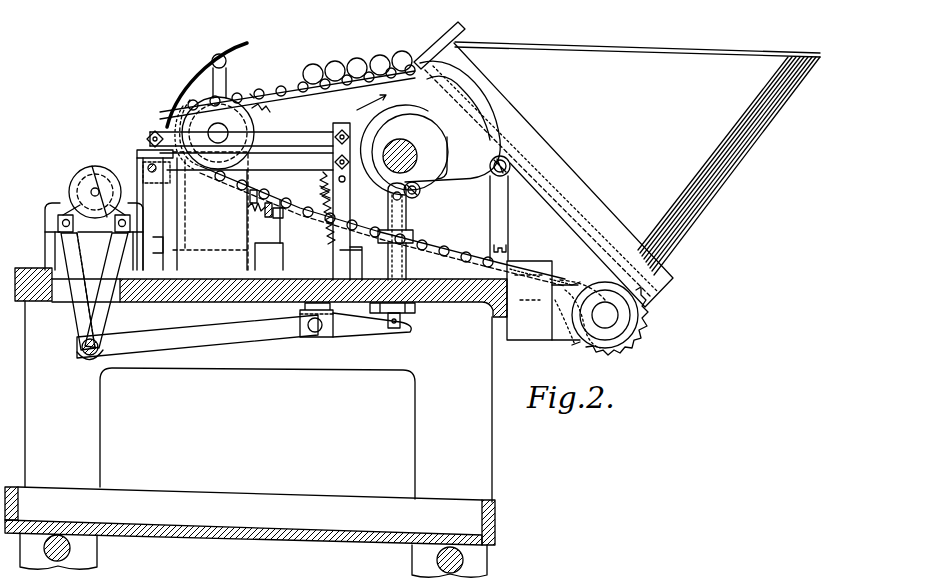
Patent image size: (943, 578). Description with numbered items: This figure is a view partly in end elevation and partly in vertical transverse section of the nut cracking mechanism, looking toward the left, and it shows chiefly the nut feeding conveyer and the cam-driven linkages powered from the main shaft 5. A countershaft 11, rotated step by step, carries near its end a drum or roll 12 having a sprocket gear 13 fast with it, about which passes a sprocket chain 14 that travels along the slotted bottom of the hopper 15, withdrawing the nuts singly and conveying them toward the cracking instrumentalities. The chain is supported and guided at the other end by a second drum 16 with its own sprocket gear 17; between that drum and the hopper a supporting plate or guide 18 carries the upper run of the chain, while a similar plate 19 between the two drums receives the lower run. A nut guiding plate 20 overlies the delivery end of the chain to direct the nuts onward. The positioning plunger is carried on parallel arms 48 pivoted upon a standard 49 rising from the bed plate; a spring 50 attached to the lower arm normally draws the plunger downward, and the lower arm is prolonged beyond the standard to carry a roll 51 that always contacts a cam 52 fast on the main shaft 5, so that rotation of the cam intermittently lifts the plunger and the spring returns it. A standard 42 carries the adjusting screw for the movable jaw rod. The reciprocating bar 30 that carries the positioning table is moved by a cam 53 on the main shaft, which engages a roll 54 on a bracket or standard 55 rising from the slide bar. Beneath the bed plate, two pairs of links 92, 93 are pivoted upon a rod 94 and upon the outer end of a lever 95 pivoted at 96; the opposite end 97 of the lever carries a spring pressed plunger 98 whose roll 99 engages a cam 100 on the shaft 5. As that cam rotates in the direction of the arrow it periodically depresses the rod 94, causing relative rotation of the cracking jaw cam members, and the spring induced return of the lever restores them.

The main shaft 5 is at (408, 157).
The countershaft 11 is at (603, 317).
The drum or roll 12 is at (640, 318).
The sprocket gear 13 is at (640, 341).
The sprocket chain 14 is at (582, 222).
The hopper 15 is at (707, 196).
The second drum 16 is at (203, 122).
The sprocket gear 17 is at (262, 123).
The supporting plate or guide 18 is at (320, 92).
The plate 19 is at (316, 216).
The nut guiding plate 20 is at (194, 78).
The reciprocating bar 30 is at (533, 263).
The standard 42 is at (280, 229).
The parallel arms 48 is at (300, 163).
The standard 49 is at (339, 180).
The spring 50 is at (320, 193).
The roll 51 is at (420, 191).
The cam 52 is at (425, 143).
The cam 53 is at (473, 95).
The roll 54 is at (497, 172).
The bracket or standard 55 is at (501, 208).
The link 92 is at (72, 313).
The link 93 is at (106, 313).
The rod 94 is at (80, 350).
The lever 95 is at (202, 340).
The pivot 96 is at (317, 333).
The opposite end of lever 97 is at (377, 332).
The spring pressed plunger 98 is at (403, 219).
The roll 99 is at (392, 205).
The cam 100 is at (437, 106).